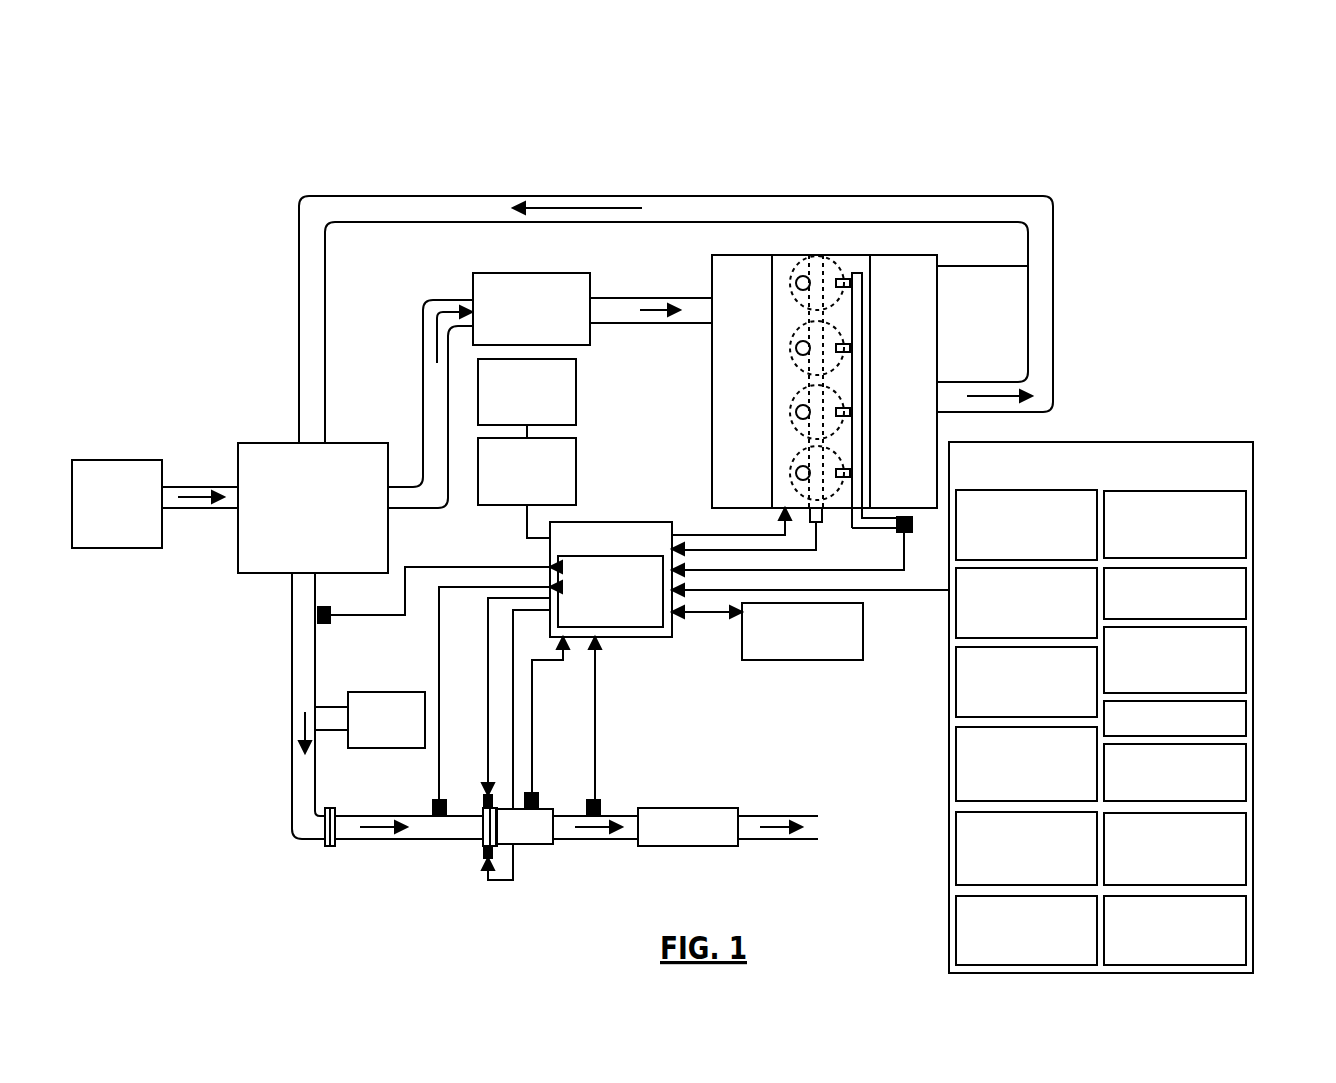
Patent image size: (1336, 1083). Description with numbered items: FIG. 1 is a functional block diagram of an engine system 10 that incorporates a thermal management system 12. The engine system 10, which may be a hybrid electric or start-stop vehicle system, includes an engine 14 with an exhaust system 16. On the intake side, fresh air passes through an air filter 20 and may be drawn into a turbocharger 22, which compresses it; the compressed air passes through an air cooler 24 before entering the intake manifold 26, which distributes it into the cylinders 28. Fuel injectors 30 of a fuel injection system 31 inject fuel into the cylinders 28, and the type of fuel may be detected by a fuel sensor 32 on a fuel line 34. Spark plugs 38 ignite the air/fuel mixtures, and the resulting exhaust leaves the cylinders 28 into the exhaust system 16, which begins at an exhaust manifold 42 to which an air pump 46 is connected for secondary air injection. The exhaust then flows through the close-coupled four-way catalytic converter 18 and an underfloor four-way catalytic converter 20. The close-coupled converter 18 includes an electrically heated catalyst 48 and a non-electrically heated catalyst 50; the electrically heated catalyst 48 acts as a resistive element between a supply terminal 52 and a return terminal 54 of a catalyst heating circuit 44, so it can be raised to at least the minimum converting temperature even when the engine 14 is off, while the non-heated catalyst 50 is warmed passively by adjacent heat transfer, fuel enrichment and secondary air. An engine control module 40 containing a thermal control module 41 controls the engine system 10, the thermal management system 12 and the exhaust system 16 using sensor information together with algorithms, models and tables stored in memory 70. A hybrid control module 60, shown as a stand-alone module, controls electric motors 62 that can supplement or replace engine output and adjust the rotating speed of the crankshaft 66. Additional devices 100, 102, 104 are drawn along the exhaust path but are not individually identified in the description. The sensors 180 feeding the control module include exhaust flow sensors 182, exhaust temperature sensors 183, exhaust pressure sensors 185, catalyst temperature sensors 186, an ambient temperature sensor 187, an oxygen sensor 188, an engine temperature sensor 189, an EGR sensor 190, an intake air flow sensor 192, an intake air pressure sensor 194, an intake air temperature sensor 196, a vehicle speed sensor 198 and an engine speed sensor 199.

The engine system 10 is at (280, 144).
The thermal management system 12 is at (222, 692).
The engine 14 is at (817, 255).
The exhaust system 16 is at (358, 884).
The close-coupled four-way catalytic converter 18 is at (525, 844).
The underfloor four-way catalytic converter / air filter 20 is at (113, 460).
The turbocharger 22 is at (340, 443).
The air cooler 24 is at (582, 273).
The intake manifold 26 is at (712, 282).
The cylinders 28 is at (833, 262).
The fuel injectors 30 is at (850, 284).
The fuel injection system 31 is at (950, 331).
The fuel sensor 32 is at (912, 532).
The fuel line 34 is at (888, 518).
The spark plugs 38 is at (796, 283).
The engine control module 40 is at (665, 522).
The thermal control module 41 is at (630, 627).
The exhaust manifold 42 is at (937, 266).
The catalyst heating circuit 44 is at (471, 668).
The air pump 46 is at (329, 607).
The electrically heated catalyst 48 is at (482, 828).
The non-electrically heated catalyst 50 is at (553, 840).
The supply terminal 52 is at (486, 793).
The return terminal 54 is at (484, 855).
The hybrid control module 60 is at (497, 505).
The electric motors 62 is at (576, 372).
The crankshaft 66 is at (824, 498).
The memory 70 is at (863, 622).
The exhaust temperature sensor 100 is at (433, 805).
The downstream exhaust sensor 102 is at (600, 800).
The catalyst temperature sensor 104 is at (538, 793).
The sensors 180 is at (1195, 442).
The exhaust flow sensors 182 is at (1005, 490).
The exhaust temperature sensors 183 is at (1246, 525).
The exhaust pressure sensors 185 is at (955, 618).
The catalyst temperature sensors 186 is at (956, 680).
The ambient temperature sensor 187 is at (956, 745).
The oxygen sensor 188 is at (1246, 595).
The engine temperature sensor 189 is at (1246, 665).
The EGR sensor 190 is at (1246, 718).
The intake air flow sensor 192 is at (1246, 770).
The intake air pressure sensor 194 is at (956, 820).
The intake air temperature sensor 196 is at (1246, 845).
The vehicle speed sensor 198 is at (956, 910).
The engine speed sensor 199 is at (1246, 910).